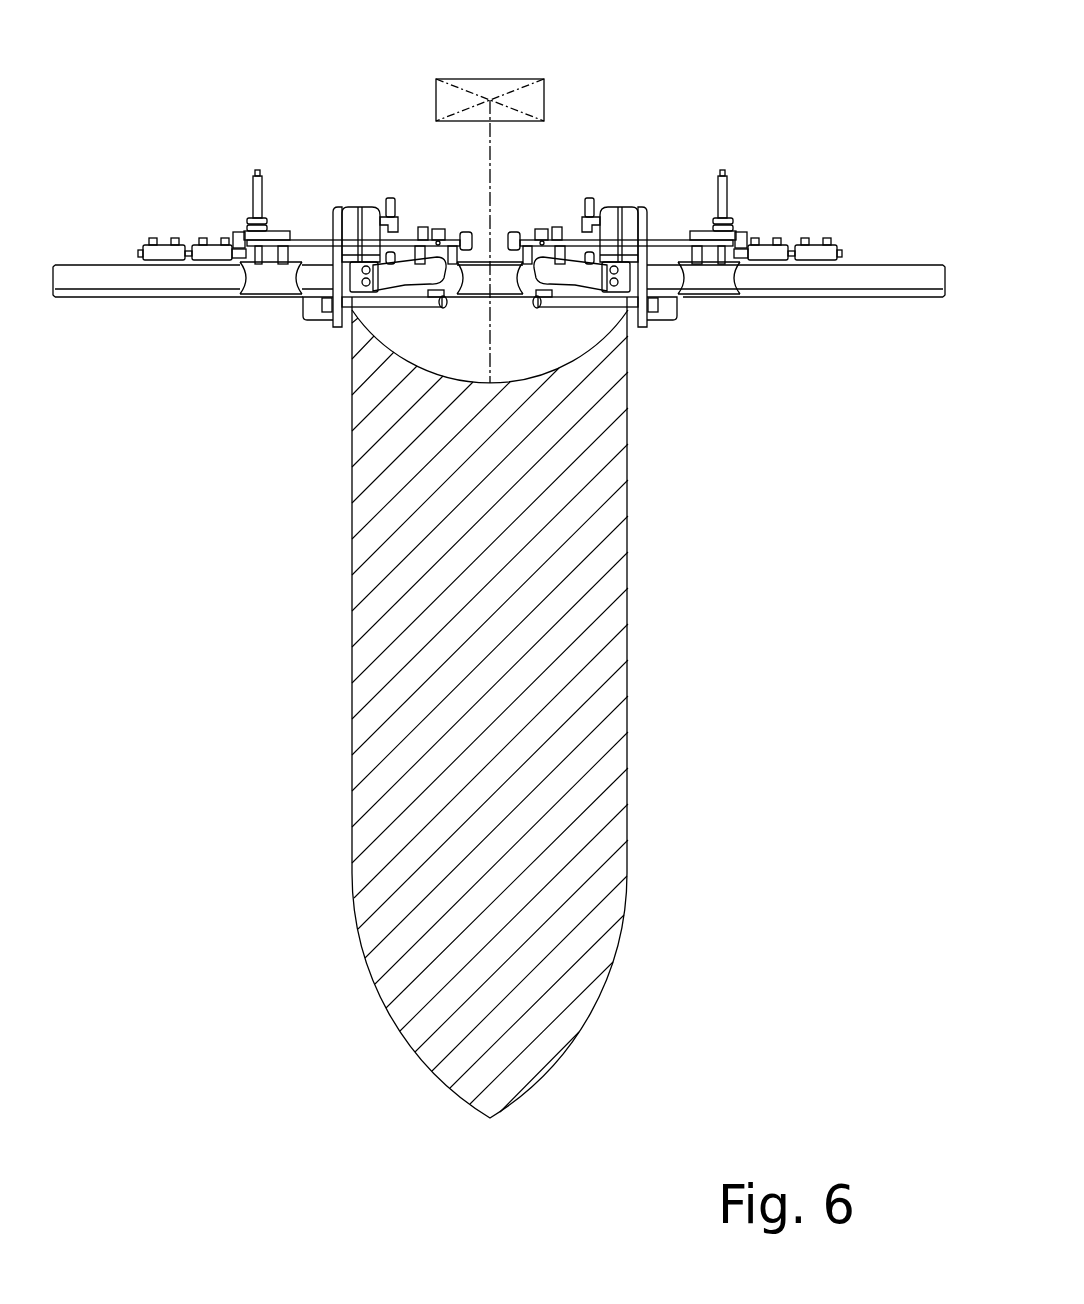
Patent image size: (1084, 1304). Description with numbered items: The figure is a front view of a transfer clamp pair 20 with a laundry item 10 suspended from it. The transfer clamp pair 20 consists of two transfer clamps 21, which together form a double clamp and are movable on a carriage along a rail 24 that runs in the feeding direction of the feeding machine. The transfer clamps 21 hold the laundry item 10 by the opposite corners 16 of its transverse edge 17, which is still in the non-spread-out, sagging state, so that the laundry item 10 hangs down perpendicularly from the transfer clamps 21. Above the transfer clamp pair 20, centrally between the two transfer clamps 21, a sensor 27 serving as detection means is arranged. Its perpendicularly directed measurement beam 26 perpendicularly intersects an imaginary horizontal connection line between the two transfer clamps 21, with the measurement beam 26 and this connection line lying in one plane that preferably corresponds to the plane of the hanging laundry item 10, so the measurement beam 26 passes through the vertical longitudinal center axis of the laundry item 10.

The laundry item 10 is at (600, 748).
The corners 16 is at (347, 278).
The transverse edge 17 is at (577, 353).
The transfer clamp pair 20 is at (391, 145).
The transfer clamps 21 is at (388, 302).
The rail 24 is at (882, 273).
The measurement beam 26 is at (490, 182).
The sensor 27 is at (535, 94).